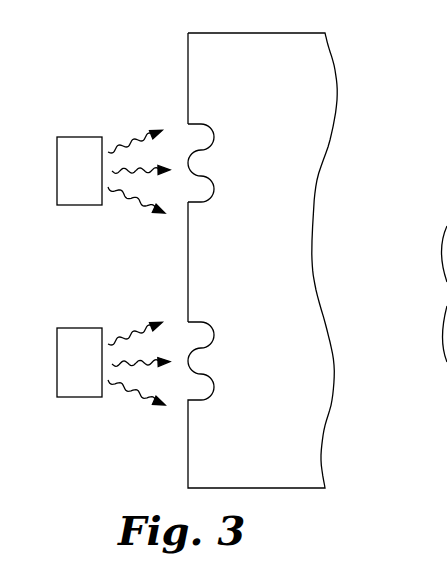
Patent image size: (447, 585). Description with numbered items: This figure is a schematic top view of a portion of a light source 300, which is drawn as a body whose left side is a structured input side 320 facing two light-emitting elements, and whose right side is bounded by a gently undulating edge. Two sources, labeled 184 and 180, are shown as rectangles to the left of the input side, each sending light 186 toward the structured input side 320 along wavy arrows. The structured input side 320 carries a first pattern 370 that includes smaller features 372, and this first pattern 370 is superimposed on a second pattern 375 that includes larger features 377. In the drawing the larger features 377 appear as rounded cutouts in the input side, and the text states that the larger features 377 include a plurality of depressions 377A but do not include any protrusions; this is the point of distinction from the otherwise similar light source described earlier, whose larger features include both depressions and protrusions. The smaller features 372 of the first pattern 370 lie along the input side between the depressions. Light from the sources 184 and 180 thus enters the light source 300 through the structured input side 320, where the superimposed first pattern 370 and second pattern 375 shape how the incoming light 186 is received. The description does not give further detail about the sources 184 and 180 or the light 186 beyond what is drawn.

The light source 300 is at (352, 45).
The structured input side 320 is at (188, 46).
The first pattern 370 is at (190, 88).
The depression 377A is at (215, 132).
The second pattern 375 is at (203, 175).
The larger features 377 is at (207, 203).
The smaller features 372 is at (189, 274).
The first light source 184 is at (78, 143).
The light 186 is at (128, 146).
The second light source 180 is at (78, 336).